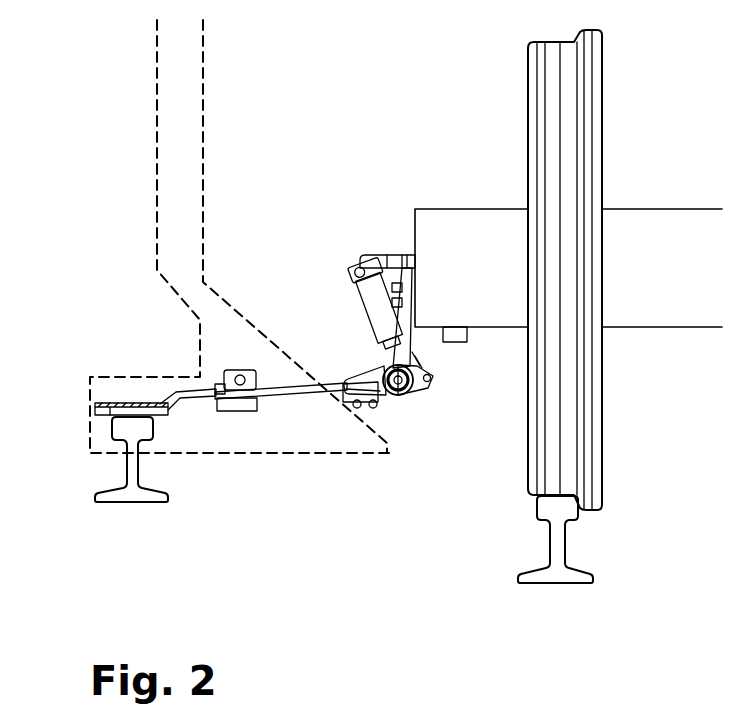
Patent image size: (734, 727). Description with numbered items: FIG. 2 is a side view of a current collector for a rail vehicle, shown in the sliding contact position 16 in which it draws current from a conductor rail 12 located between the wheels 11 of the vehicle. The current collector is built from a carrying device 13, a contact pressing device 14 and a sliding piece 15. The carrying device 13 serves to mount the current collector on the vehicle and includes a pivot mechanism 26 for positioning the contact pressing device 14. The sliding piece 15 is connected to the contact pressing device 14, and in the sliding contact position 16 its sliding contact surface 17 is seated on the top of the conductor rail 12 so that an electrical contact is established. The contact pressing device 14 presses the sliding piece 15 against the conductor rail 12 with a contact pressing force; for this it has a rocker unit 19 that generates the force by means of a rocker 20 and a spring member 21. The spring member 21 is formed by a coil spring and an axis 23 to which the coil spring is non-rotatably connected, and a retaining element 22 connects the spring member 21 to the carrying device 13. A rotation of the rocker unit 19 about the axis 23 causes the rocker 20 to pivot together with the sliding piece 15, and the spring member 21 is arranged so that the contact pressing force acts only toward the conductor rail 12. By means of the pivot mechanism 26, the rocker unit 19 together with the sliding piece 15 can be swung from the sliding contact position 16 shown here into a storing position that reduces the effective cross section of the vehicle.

The wheels 11 is at (622, 121).
The conductor rail 12 is at (152, 498).
The carrying device 13 is at (399, 233).
The contact pressing device 14 is at (311, 429).
The sliding piece 15 is at (118, 402).
The sliding contact position 16 is at (173, 342).
The sliding contact surface 17 is at (101, 429).
The rocker unit 19 is at (306, 333).
The rocker 20 is at (253, 405).
The spring member 21 is at (418, 405).
The retaining element 22 is at (432, 353).
The axis 23 is at (390, 400).
The pivot mechanism 26 is at (358, 236).